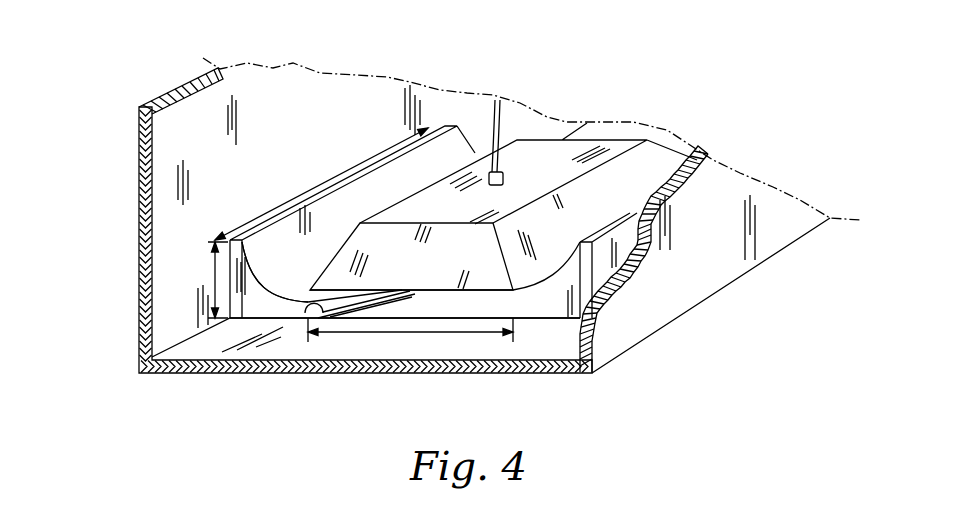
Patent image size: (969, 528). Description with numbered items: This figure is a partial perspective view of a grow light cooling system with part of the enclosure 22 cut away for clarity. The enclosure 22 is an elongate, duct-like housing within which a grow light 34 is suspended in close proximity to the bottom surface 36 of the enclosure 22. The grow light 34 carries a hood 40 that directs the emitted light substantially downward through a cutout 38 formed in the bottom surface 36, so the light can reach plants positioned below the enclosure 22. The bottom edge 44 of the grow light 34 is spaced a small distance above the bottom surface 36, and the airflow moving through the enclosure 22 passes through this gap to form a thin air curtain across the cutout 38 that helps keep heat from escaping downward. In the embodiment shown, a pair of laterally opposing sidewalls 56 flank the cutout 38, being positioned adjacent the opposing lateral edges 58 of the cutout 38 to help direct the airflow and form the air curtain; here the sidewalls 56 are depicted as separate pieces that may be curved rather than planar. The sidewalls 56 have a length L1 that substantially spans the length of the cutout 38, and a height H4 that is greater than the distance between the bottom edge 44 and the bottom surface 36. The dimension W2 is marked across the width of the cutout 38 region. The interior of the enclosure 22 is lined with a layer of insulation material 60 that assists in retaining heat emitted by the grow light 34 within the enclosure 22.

The enclosure 22 is at (132, 163).
The grow light 34 is at (538, 134).
The bottom surface 36 is at (198, 350).
The cutout 38 is at (497, 306).
The hood 40 is at (607, 148).
The bottom edge 44 is at (440, 290).
The sidewalls 56 is at (275, 325).
The lateral edges 58 is at (308, 303).
The insulation material 60 is at (167, 117).
The length of the sidewalls L1 is at (290, 197).
The height of the sidewalls H4 is at (215, 272).
The width W2 is at (418, 334).